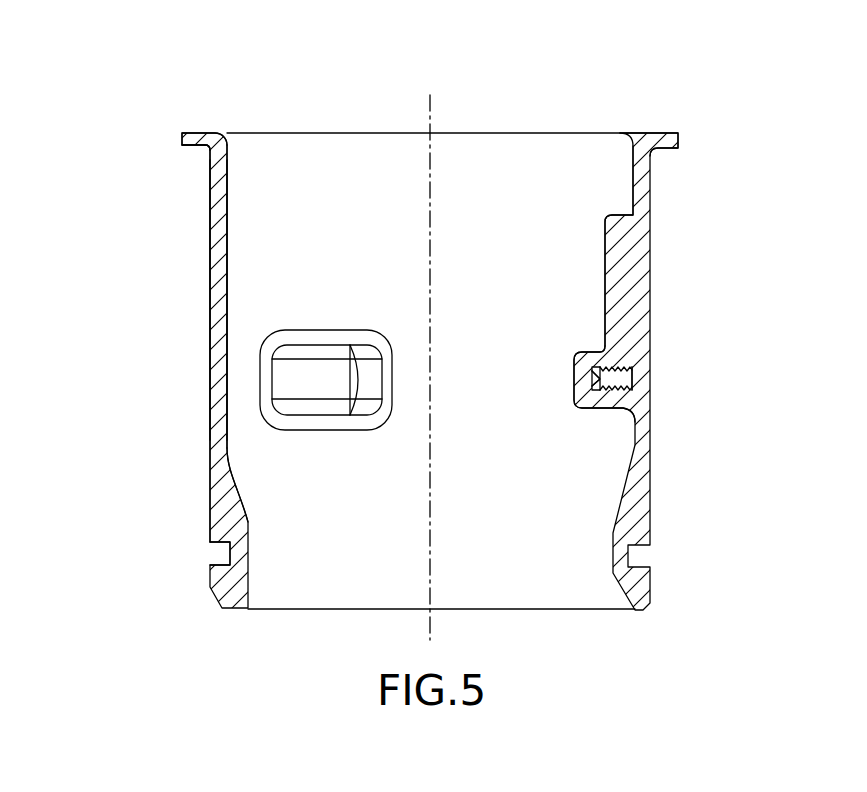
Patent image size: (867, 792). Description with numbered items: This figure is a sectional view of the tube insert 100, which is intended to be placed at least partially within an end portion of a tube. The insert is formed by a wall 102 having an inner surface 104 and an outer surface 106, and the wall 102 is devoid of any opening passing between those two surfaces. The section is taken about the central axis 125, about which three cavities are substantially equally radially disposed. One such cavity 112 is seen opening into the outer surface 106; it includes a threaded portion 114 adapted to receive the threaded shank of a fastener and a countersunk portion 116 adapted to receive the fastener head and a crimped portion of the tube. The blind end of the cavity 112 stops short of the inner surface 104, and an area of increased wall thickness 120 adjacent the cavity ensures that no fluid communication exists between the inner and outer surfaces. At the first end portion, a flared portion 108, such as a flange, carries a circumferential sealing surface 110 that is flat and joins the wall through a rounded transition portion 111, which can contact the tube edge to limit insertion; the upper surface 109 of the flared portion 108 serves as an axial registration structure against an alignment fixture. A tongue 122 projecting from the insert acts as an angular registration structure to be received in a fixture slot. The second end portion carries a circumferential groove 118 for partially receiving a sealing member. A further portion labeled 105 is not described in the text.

The tube insert 100 is at (430, 314).
The wall 102 is at (212, 262).
The inner surface 104 is at (293, 300).
The tapered wall portion 105 is at (244, 503).
The outer surface 106 is at (144, 300).
The flared portion 108 is at (195, 131).
The upper surface 109 is at (667, 131).
The circumferential sealing surface 110 is at (186, 145).
The transition portion 111 is at (207, 151).
The cavity 112 is at (671, 398).
The threaded portion 114 is at (612, 388).
The countersunk portion 116 is at (644, 365).
The circumferential groove 118 is at (214, 563).
The area of increased wall thickness 120 is at (330, 336).
The tongue 122 is at (604, 245).
The central axis 125 is at (433, 100).